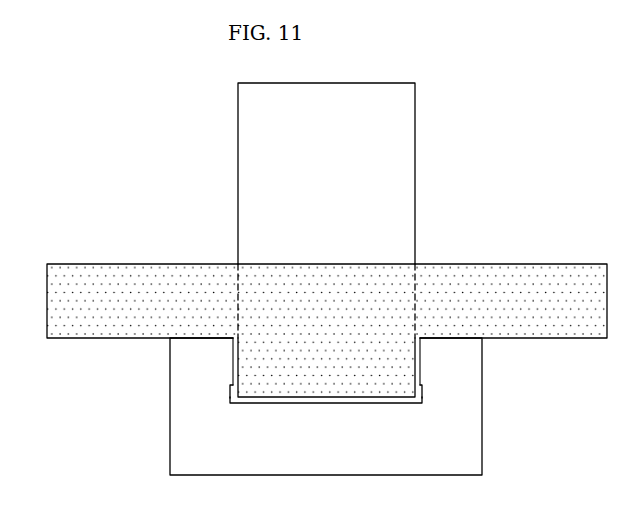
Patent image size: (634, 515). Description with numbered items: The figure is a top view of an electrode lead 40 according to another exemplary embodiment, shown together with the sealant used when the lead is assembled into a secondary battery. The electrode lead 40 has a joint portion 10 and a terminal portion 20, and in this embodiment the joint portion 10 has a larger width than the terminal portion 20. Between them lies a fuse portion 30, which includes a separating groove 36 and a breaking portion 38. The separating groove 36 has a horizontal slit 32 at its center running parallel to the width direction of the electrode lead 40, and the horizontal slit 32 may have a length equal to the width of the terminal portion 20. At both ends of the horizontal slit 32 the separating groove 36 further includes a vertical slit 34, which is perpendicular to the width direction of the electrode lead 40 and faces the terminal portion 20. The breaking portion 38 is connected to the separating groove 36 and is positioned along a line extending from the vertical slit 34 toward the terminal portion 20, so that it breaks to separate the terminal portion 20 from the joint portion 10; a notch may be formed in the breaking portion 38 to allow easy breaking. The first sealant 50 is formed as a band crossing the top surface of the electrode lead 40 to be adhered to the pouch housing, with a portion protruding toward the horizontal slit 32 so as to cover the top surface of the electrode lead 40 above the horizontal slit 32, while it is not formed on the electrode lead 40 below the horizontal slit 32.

The joint portion 10 is at (170, 458).
The terminal portion 20 is at (238, 152).
The fuse portion 30 is at (82, 363).
The horizontal slit 32 is at (248, 404).
The vertical slit 34 is at (235, 387).
The separating groove 36 is at (125, 378).
The breaking portion 38 is at (234, 358).
The electrode lead 40 is at (62, 449).
The first sealant 50 is at (541, 264).